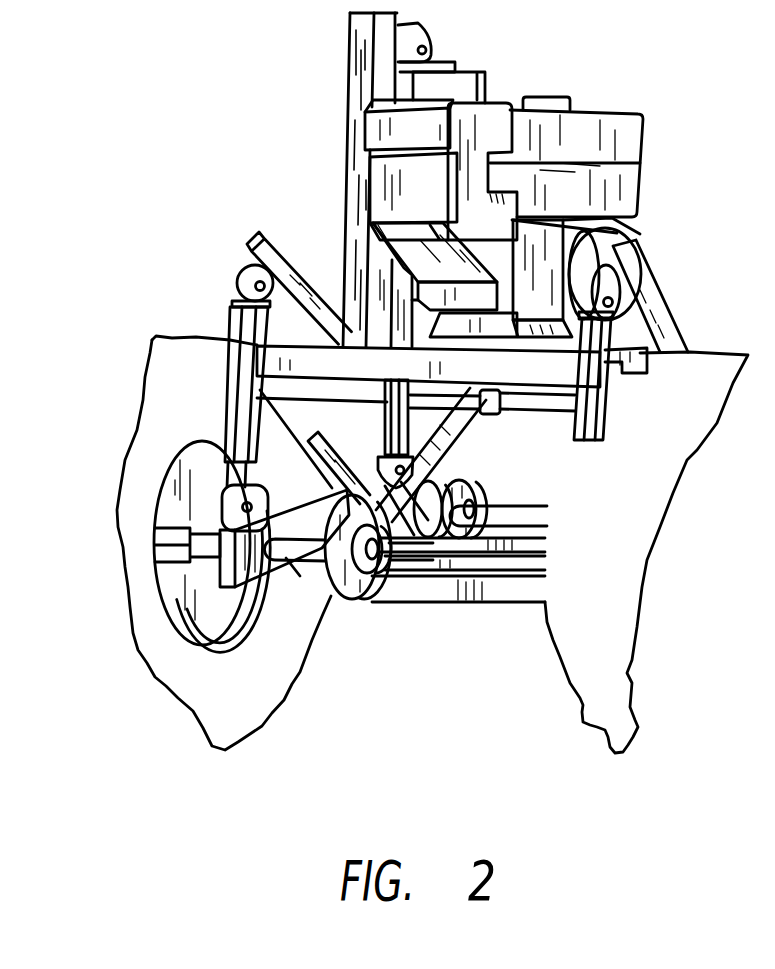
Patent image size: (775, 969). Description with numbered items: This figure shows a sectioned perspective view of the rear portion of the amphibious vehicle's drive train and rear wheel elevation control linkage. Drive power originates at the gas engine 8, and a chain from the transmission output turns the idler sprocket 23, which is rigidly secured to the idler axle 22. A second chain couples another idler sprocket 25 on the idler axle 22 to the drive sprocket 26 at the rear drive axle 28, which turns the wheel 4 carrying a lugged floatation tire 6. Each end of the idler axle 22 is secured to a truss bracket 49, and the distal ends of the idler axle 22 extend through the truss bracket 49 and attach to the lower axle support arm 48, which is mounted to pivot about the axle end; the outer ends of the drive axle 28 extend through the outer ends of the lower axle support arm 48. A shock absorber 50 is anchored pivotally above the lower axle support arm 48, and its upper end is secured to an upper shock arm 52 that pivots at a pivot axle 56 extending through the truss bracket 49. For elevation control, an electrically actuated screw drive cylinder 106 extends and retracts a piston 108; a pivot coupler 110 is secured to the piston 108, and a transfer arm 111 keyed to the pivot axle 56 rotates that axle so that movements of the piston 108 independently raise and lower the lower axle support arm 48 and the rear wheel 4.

The wheel 4 is at (237, 636).
The lugged floatation tire 6 is at (153, 670).
The gas engine 8 is at (648, 140).
The idler axle 22 is at (533, 517).
The idler sprocket 23 is at (430, 540).
The idler sprocket 25 is at (478, 498).
The drive sprocket 26 is at (363, 603).
The rear drive axle 28 is at (293, 567).
The lower axle support arm 48 is at (220, 560).
The truss bracket 49 is at (297, 386).
The shock absorber 50 is at (237, 325).
The upper shock arm 52 is at (250, 247).
The pivot axle 56 is at (540, 407).
The screw drive cylinder 106 is at (398, 290).
The piston 108 is at (393, 400).
The pivot coupler 110 is at (390, 468).
The transfer arm 111 is at (475, 435).